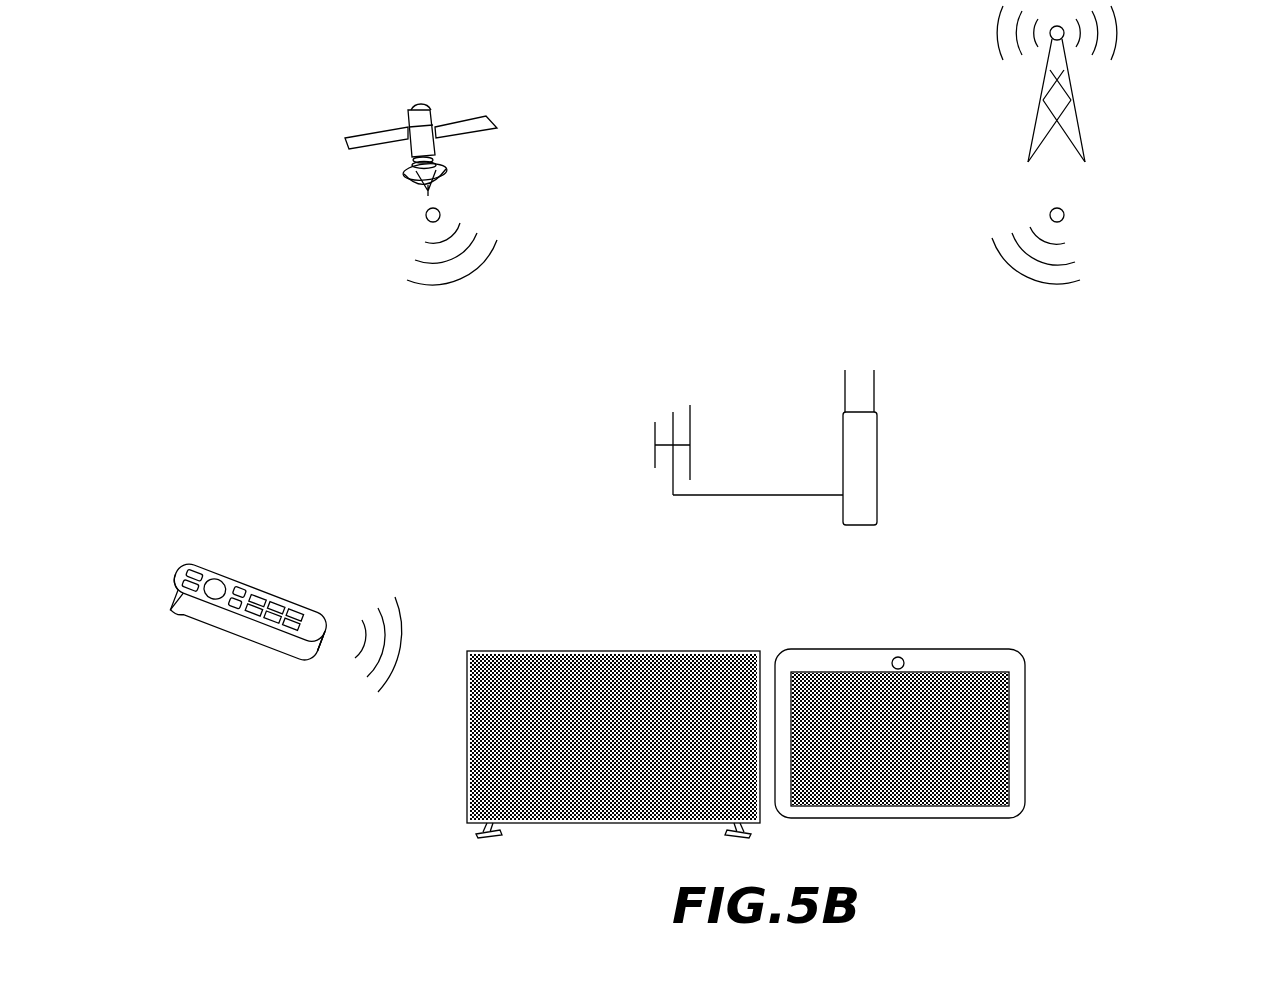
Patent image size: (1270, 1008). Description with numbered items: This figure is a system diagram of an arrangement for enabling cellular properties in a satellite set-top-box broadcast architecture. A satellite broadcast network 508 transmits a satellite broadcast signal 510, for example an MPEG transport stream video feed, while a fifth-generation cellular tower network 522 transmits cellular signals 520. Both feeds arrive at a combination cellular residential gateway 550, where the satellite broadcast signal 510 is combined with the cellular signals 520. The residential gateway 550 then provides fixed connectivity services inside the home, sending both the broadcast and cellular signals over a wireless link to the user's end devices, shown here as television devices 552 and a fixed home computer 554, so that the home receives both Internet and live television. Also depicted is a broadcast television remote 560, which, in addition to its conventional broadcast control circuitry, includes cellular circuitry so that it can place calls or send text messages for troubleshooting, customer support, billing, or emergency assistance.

The satellite broadcast network 508 is at (408, 109).
The satellite broadcast signal 510 is at (515, 263).
The 5G cellular tower network 522 is at (1112, 132).
The 5G cellular signals 520 is at (1100, 262).
The combination 5G cellular residential gateway 550 is at (748, 495).
The broadcast television remote 560 is at (273, 583).
The television devices 552 is at (465, 738).
The fixed home computer 554 is at (1025, 737).